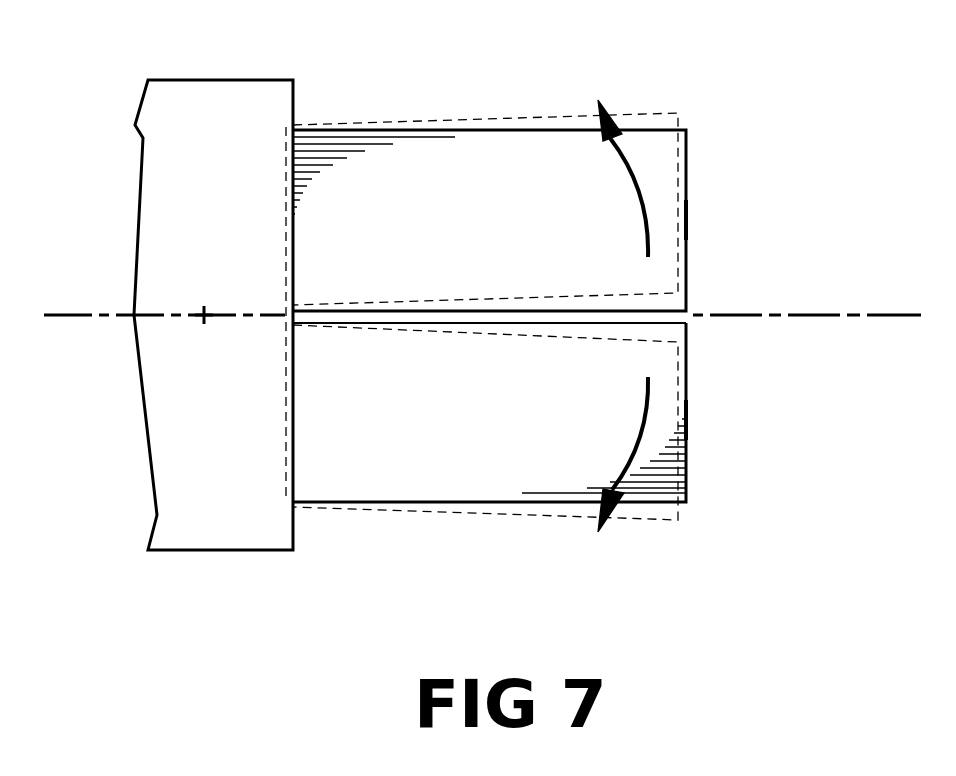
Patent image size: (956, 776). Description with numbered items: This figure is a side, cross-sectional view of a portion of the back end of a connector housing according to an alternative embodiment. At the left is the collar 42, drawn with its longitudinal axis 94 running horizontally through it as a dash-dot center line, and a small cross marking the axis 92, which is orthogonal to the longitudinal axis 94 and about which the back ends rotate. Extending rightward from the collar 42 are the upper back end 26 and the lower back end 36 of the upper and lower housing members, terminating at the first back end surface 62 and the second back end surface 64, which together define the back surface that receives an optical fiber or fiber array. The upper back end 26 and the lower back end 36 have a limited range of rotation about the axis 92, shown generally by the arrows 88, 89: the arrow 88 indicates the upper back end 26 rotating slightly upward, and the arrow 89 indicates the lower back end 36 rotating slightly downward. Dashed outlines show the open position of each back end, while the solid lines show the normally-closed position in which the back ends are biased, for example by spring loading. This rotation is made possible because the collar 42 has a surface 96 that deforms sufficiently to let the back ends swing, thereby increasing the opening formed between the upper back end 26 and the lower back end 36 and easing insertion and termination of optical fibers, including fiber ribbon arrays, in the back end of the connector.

The collar 42 is at (191, 89).
The upper back end 26 is at (453, 232).
The lower back end 36 is at (453, 424).
The first back end surface 62 is at (686, 218).
The second back end surface 64 is at (686, 425).
The arrow 88 is at (620, 170).
The arrow 89 is at (620, 457).
The axis 92 is at (205, 300).
The longitudinal axis 94 is at (88, 305).
The surface 96 is at (297, 111).